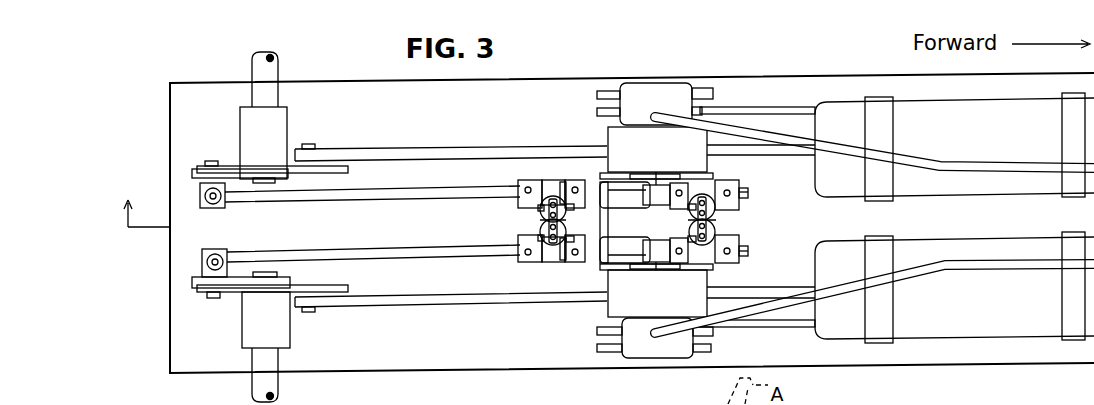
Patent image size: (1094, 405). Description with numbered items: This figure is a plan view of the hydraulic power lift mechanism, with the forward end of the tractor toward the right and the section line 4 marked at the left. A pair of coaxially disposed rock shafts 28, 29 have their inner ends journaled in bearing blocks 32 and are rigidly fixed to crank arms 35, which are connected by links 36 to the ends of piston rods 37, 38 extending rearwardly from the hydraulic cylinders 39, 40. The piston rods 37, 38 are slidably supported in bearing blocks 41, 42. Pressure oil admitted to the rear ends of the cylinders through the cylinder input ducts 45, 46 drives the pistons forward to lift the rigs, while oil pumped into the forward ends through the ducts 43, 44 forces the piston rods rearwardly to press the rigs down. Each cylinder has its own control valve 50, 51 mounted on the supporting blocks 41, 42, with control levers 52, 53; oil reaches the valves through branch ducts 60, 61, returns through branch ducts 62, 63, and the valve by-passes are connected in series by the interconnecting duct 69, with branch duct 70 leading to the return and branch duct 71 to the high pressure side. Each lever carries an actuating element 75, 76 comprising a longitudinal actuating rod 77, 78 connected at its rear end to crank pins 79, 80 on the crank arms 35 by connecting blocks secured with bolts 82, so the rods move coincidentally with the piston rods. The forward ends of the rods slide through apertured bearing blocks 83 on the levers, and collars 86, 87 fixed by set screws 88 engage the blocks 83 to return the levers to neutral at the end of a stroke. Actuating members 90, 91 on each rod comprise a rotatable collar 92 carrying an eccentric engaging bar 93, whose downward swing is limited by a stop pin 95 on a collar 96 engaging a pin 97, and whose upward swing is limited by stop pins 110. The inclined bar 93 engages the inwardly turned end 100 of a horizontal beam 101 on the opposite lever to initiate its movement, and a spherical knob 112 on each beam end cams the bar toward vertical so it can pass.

The section line 4 is at (145, 202).
The rock shaft 28 is at (275, 386).
The rock shaft 29 is at (272, 63).
The bearing block 32 is at (248, 120).
The crank arm 35 is at (194, 172).
The link 36 is at (270, 165).
The piston rod 37 is at (424, 150).
The piston rod 38 is at (412, 310).
The hydraulic cylinder 39 is at (900, 147).
The hydraulic cylinder 40 is at (900, 287).
The bearing block 41 is at (657, 149).
The bearing block 42 is at (657, 293).
The duct 43 is at (822, 142).
The duct 44 is at (822, 292).
The cylinder input duct 45 is at (758, 112).
The cylinder input duct 46 is at (770, 328).
The control valve 50 is at (642, 75).
The control valve 51 is at (632, 368).
The control lever 52 is at (664, 174).
The control lever 53 is at (646, 272).
The branch duct 60 is at (710, 108).
The branch duct 61 is at (704, 328).
The branch duct 62 is at (600, 113).
The branch duct 63 is at (600, 332).
The interconnecting duct 69 is at (600, 96).
The branch duct 70 is at (704, 90).
The branch duct 71 is at (687, 360).
The actuating element 75 is at (758, 196).
The actuating element 76 is at (758, 255).
The actuating rod 77 is at (358, 200).
The actuating rod 78 is at (374, 252).
The crank pin 79 is at (200, 192).
The crank pin 80 is at (202, 258).
The bolt 82 is at (214, 208).
The bearing block 83 is at (650, 240).
The collar 86 is at (568, 178).
The collar 87 is at (656, 270).
The set screw 88 is at (578, 184).
The actuating member 90 is at (549, 172).
The actuating member 91 is at (736, 184).
The collar 92 is at (520, 182).
The engaging bar 93 is at (542, 206).
The stop pin 95 is at (542, 232).
The collar 96 is at (522, 196).
The pin 97 is at (520, 262).
The inwardly turned end 100 is at (600, 218).
The horizontal beam 101 is at (630, 180).
The stop pin 110 is at (574, 212).
The knob 112 is at (612, 200).